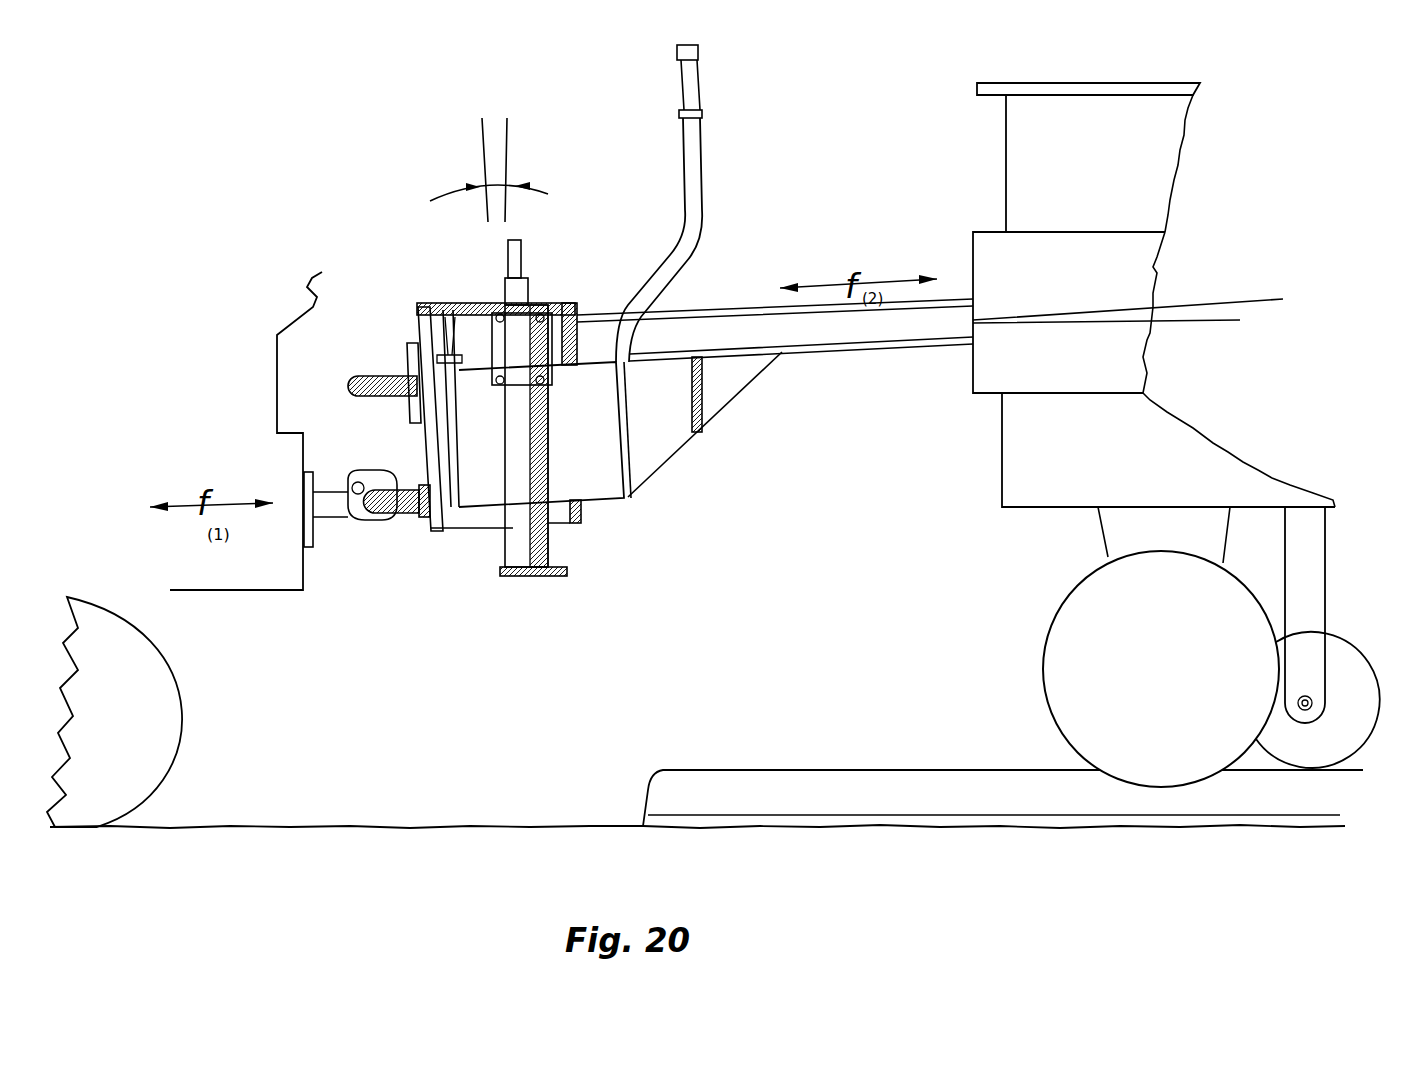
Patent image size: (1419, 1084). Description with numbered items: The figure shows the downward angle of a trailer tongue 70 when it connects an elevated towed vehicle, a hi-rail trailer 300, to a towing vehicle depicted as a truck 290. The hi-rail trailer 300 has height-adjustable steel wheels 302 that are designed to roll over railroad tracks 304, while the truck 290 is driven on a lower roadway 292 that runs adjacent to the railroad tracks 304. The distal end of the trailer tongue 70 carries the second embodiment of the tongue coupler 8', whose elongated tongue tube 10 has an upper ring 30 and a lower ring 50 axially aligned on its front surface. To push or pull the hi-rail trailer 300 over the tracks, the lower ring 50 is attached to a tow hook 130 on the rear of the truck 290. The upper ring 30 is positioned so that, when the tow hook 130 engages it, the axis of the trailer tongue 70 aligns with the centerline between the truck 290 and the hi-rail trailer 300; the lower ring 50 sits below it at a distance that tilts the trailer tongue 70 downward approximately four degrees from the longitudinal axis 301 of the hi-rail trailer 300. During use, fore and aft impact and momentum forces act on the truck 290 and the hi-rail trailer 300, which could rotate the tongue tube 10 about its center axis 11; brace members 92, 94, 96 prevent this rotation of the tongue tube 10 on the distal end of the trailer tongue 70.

The lower roadway 292 is at (390, 818).
The truck 290 is at (269, 421).
The tongue coupler 8' is at (400, 410).
The upper ring 30 is at (362, 377).
The tow hook 130 is at (405, 522).
The lower ring 50 is at (402, 520).
The center axis 11 is at (508, 434).
The brace member 92 is at (605, 478).
The tongue tube 10 is at (587, 522).
The trailer tongue 70 is at (757, 298).
The brace member 96 is at (703, 386).
The brace member 94 is at (683, 441).
The hi-rail trailer 300 is at (977, 93).
The longitudinal axis 301 is at (1190, 320).
The height-adjustable steel wheels 302 is at (1365, 645).
The railroad tracks 304 is at (793, 765).